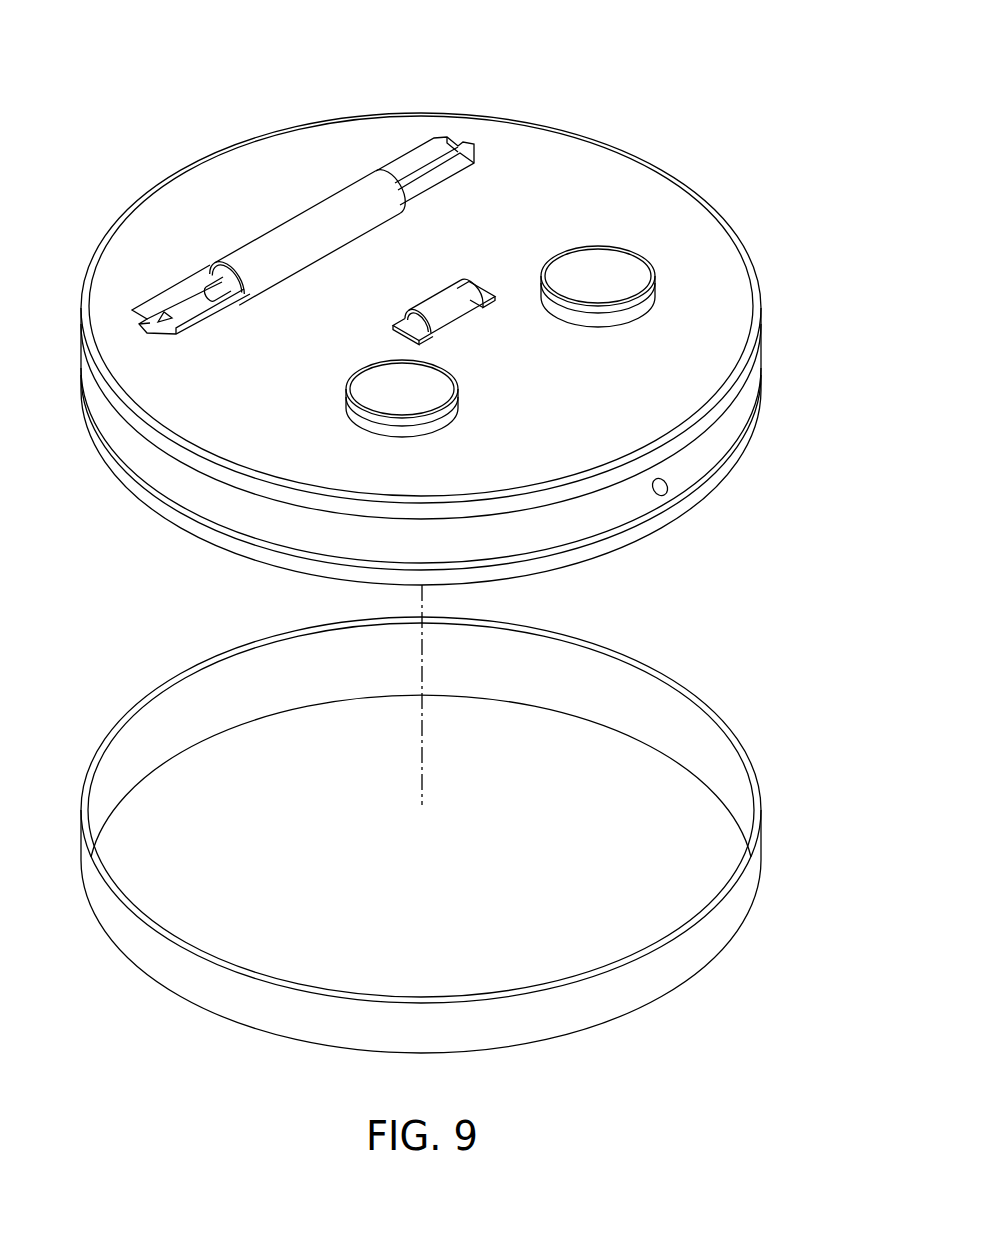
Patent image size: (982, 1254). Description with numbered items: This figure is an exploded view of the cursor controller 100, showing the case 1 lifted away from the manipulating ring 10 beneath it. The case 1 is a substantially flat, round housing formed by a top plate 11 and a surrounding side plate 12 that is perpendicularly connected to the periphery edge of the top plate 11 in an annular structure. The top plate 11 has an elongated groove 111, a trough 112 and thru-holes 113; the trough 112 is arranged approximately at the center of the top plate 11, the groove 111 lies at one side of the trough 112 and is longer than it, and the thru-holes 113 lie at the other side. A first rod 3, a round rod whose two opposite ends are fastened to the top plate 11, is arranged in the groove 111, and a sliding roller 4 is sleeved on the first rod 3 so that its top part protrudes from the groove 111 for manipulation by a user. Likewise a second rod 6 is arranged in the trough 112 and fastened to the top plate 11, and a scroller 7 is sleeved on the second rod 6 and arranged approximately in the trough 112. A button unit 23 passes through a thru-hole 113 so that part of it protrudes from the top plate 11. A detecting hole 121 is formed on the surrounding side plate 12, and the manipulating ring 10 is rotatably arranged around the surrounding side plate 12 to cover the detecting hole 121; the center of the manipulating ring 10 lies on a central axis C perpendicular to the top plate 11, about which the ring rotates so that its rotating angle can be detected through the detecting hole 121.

The cursor controller 100 is at (132, 57).
The case 1 is at (660, 172).
The top plate 11 is at (695, 228).
The surrounding side plate 12 is at (722, 442).
The detecting hole 121 is at (662, 486).
The manipulating ring 10 is at (735, 728).
The sliding roller 4 is at (322, 200).
The first rod 3 is at (180, 310).
The groove 111 is at (401, 160).
The scroller 7 is at (440, 293).
The second rod 6 is at (398, 328).
The trough 112 is at (475, 287).
The button unit 23 is at (385, 380).
The thru-hole 113 is at (357, 432).
The central axis C is at (422, 727).